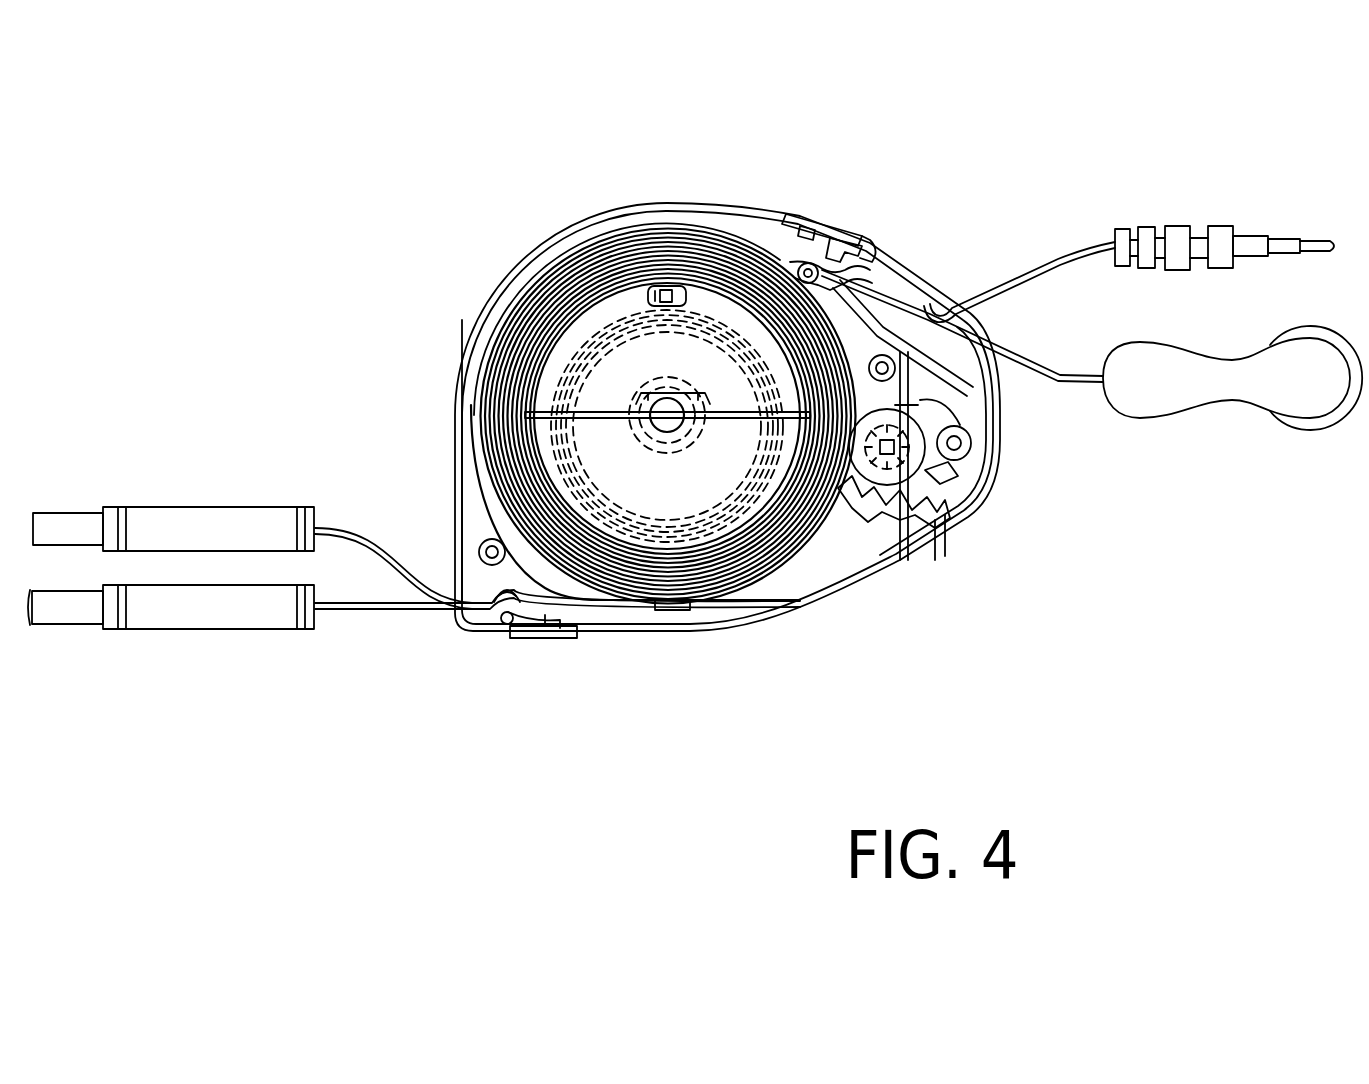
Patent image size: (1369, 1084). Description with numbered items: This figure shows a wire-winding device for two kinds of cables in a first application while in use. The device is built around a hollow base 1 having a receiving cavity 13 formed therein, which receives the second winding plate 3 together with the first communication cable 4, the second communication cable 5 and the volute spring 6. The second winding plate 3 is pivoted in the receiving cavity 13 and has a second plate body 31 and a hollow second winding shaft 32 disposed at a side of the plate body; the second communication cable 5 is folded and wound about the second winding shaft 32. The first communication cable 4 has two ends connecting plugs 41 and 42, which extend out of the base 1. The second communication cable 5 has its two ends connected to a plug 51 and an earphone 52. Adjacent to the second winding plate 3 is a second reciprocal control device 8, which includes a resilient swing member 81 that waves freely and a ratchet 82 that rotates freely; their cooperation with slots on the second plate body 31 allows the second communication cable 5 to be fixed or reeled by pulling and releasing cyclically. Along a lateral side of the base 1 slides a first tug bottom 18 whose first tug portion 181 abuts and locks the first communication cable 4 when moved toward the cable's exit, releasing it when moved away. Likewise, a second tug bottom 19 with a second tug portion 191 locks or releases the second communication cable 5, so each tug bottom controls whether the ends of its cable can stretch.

The base 1 is at (458, 648).
The receiving cavity 13 is at (477, 517).
The second winding plate 3 is at (545, 333).
The second plate body 31 is at (632, 357).
The second winding shaft 32 is at (585, 298).
The volute spring 6 is at (707, 315).
The second tug bottom 19 is at (826, 216).
The second tug portion 191 is at (846, 262).
The second communication cable 5 is at (1040, 270).
The plug 51 is at (1178, 236).
The earphone 52 is at (1222, 398).
The first communication cable 4 is at (382, 610).
The plug 41 is at (196, 632).
The plug 42 is at (207, 505).
The first tug bottom 18 is at (560, 640).
The first tug portion 181 is at (505, 624).
The second reciprocal control device 8 is at (928, 525).
The resilient swing member 81 is at (877, 500).
The ratchet 82 is at (942, 480).